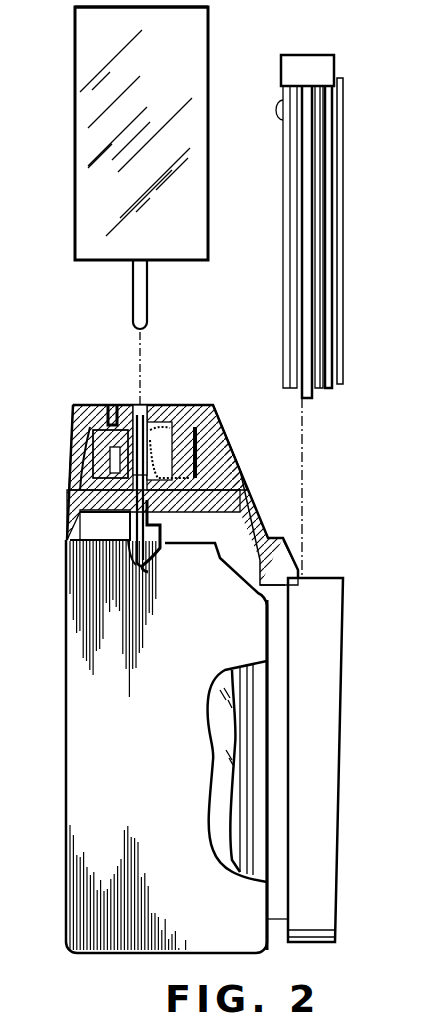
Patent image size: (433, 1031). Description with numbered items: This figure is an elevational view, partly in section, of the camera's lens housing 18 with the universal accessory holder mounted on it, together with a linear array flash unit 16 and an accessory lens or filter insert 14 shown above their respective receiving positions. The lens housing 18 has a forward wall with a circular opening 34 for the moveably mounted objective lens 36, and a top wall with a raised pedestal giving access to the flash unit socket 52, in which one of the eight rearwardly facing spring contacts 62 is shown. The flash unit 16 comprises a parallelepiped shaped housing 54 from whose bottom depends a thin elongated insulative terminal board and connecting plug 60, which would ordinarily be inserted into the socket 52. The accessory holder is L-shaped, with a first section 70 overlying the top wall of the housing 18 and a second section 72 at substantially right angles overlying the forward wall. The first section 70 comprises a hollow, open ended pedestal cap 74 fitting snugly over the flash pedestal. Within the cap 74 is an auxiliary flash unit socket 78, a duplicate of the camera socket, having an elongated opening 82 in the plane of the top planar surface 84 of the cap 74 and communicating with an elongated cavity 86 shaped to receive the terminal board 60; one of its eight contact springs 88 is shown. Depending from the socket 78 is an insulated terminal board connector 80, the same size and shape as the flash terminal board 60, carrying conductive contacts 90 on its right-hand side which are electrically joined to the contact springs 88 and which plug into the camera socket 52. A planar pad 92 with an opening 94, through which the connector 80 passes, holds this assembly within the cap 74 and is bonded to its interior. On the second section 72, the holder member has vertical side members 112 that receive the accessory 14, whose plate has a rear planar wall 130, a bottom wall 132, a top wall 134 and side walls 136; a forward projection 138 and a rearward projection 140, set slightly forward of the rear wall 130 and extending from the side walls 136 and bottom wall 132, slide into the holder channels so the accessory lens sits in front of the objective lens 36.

The accessory lens or filter insert 14 is at (315, 290).
The linear array flash unit 16 is at (72, 22).
The lens housing 18 is at (118, 958).
The circular opening 34 is at (262, 662).
The objective lens 36 is at (212, 700).
The flash unit socket 52 is at (143, 530).
The flash unit housing 54 is at (75, 8).
The terminal board and connecting plug 60 is at (133, 296).
The spring contacts 62 is at (160, 548).
The first holder section 70 is at (159, 485).
The second holder section 72 is at (330, 782).
The pedestal cap 74 is at (93, 448).
The flash unit socket 78 is at (85, 470).
The terminal board connector 80 is at (140, 574).
The elongated opening 82 is at (141, 420).
The top planar surface 84 is at (104, 405).
The elongated cavity 86 is at (185, 425).
The contact springs 88 is at (172, 452).
The electrically conductive contacts 90 is at (147, 566).
The planar pad 92 is at (265, 524).
The opening 94 is at (124, 542).
The side members 112 is at (310, 920).
The rear planar wall 130 is at (283, 294).
The bottom wall 132 is at (312, 397).
The top wall 134 is at (300, 55).
The side walls 136 is at (313, 268).
The forward projection 138 is at (332, 204).
The rearward projection 140 is at (302, 178).